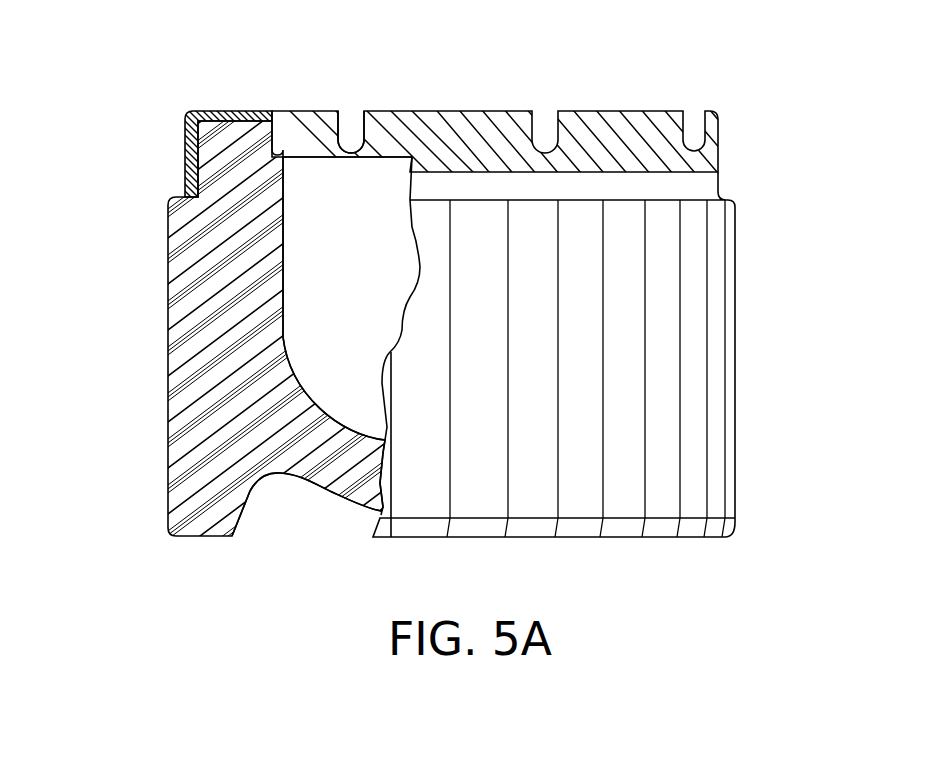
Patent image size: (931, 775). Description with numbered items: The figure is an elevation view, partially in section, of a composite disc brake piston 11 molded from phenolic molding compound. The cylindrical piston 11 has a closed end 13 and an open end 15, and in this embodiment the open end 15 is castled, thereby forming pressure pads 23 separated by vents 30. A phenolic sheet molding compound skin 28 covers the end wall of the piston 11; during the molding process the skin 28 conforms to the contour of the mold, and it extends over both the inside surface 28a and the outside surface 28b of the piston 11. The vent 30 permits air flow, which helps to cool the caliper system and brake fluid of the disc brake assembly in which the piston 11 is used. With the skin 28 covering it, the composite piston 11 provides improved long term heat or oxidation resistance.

The piston 11 is at (735, 425).
The closed end 13 is at (325, 495).
The open end 15 is at (362, 197).
The pressure pads 23 is at (487, 112).
The phenolic sheet molding compound skin 28 is at (176, 117).
The inside surface 28a is at (334, 349).
The outside surface 28b is at (184, 159).
The vent 30 is at (353, 112).